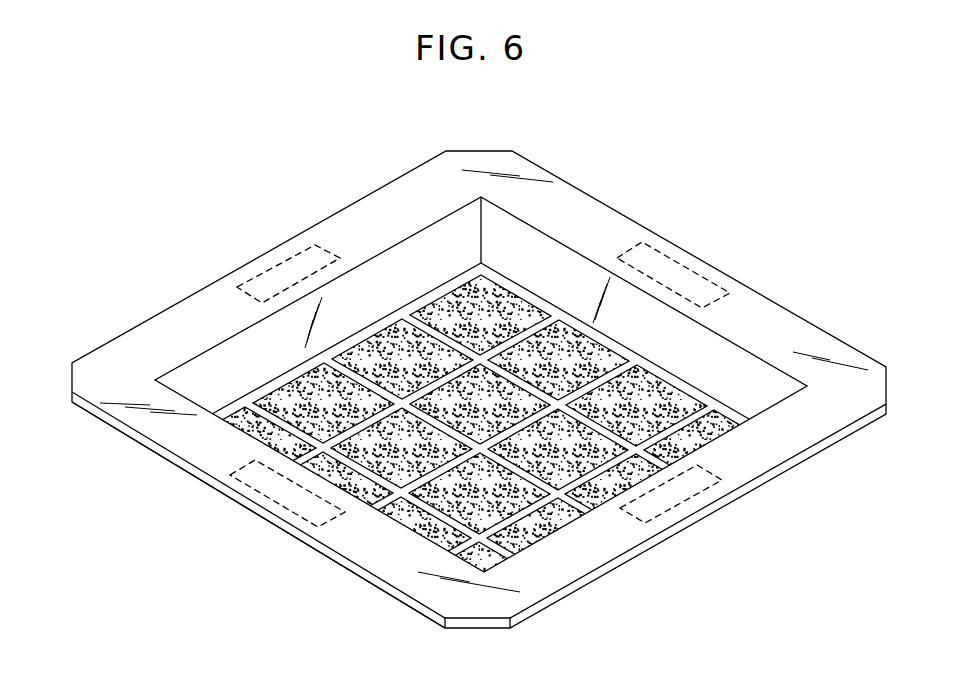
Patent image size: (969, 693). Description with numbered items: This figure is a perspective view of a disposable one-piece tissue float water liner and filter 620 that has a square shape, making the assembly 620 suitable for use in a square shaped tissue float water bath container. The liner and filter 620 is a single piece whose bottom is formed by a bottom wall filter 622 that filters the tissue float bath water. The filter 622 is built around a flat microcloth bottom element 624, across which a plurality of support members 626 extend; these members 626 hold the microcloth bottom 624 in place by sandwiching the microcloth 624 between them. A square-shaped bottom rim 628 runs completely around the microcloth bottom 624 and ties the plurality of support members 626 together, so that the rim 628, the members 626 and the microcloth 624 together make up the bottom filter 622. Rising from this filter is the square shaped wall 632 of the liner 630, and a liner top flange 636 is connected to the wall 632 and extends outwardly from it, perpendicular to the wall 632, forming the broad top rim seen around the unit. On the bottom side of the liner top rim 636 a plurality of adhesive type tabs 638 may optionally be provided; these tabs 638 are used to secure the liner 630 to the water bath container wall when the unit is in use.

The liner and filter 620 is at (250, 240).
The bottom wall filter 622 is at (462, 382).
The flat microcloth bottom element 624 is at (584, 351).
The support members 626 is at (362, 380).
The square-shaped bottom rim 628 is at (253, 397).
The liner 630 is at (123, 440).
The square shaped wall 632 is at (457, 243).
The liner top flange 636 is at (390, 554).
The adhesive type tabs 638 is at (662, 503).